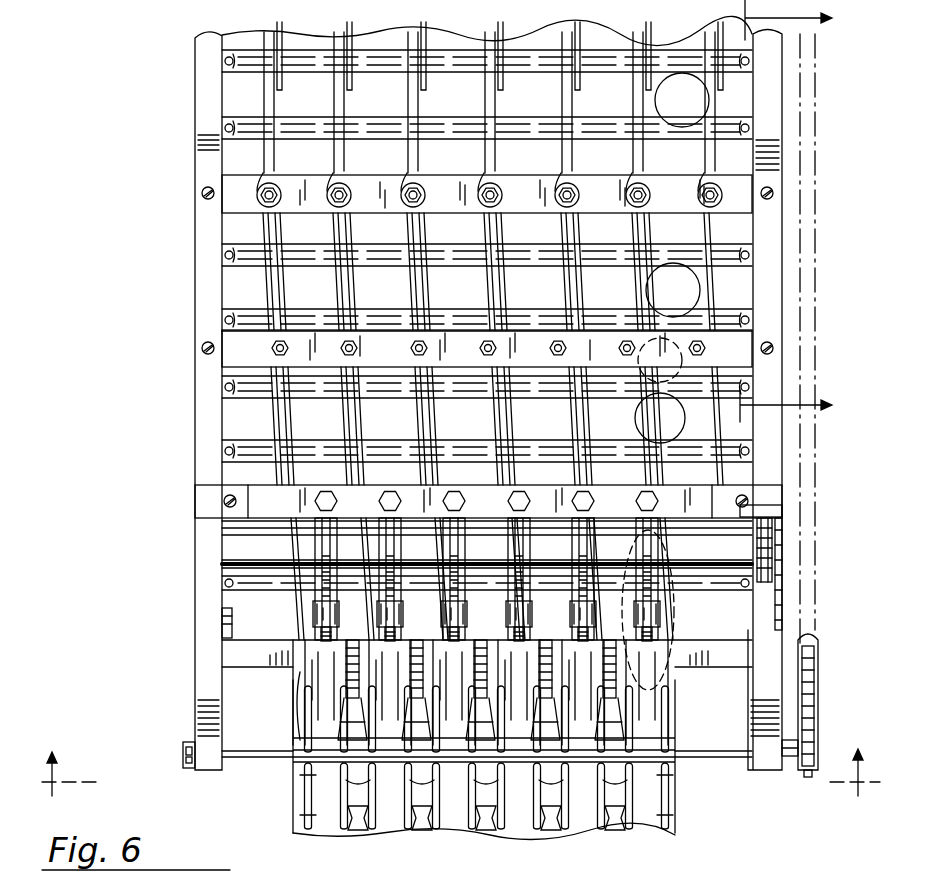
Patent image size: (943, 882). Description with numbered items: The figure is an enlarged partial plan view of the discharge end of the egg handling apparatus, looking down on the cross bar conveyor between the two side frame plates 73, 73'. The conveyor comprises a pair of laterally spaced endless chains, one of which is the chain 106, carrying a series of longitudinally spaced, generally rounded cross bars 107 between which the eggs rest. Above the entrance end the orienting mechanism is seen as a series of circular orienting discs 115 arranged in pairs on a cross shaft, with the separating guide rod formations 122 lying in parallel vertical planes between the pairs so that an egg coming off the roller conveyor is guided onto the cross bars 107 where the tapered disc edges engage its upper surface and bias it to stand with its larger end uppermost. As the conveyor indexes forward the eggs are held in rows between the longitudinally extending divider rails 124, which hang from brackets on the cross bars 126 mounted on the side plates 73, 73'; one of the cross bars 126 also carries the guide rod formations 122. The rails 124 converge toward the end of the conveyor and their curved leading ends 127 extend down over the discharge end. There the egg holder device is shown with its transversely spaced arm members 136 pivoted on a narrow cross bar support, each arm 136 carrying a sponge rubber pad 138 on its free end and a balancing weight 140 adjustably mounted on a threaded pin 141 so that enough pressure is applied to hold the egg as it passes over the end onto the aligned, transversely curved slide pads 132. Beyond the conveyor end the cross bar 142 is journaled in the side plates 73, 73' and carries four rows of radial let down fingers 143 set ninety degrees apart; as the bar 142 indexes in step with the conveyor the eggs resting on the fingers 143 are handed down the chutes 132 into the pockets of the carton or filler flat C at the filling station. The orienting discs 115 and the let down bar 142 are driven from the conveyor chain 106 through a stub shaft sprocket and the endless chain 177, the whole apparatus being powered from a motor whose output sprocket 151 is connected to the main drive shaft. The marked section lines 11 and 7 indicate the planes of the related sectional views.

The orienting disc 115 is at (405, 44).
The guide rod formation 122 is at (341, 100).
The cross bar 107 is at (301, 129).
The cross bar 126 is at (233, 193).
The divider rail 124 is at (417, 243).
The section line 11 is at (771, 213).
The threaded pin 141 is at (453, 539).
The arm member 136 is at (318, 545).
The balancing weight 140 is at (318, 612).
The sponge rubber pad 138 is at (318, 640).
The curved leading end 127 is at (752, 574).
The endless chain 106 is at (783, 519).
The endless chain 177 is at (836, 520).
The side frame plate 73 is at (804, 400).
The side frame plate 73' is at (185, 401).
The slide pad 132 is at (309, 672).
The filler flat C is at (297, 728).
The let down finger 143 is at (309, 739).
The cross bar 142 is at (302, 769).
The output sprocket 151 is at (806, 746).
The section line 7 is at (461, 783).